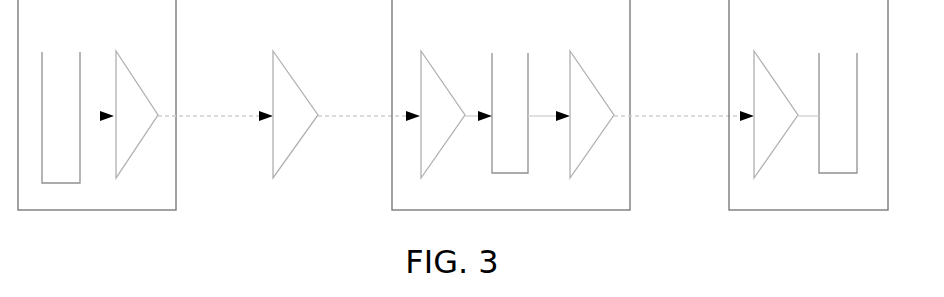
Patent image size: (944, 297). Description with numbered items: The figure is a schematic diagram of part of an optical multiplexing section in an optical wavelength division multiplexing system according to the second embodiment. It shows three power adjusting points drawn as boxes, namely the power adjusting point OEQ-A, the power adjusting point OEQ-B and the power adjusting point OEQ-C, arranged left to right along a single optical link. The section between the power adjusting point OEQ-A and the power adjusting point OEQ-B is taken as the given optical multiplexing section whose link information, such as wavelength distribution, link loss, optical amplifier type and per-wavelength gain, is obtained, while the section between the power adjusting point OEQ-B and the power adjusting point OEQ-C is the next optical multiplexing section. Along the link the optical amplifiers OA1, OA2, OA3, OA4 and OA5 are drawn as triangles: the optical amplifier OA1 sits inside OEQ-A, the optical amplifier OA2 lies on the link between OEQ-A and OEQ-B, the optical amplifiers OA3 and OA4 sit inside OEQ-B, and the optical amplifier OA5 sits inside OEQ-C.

The power adjusting point OEQ-A is at (97, 105).
The power adjusting point OEQ-B is at (511, 105).
The power adjusting point OEQ-C is at (808, 105).
The optical amplifier 1 OA1 is at (129, 114).
The optical amplifier 2 OA2 is at (294, 114).
The optical amplifier 3 OA3 is at (442, 114).
The optical amplifier 4 OA4 is at (591, 114).
The optical amplifier 5 OA5 is at (775, 114).